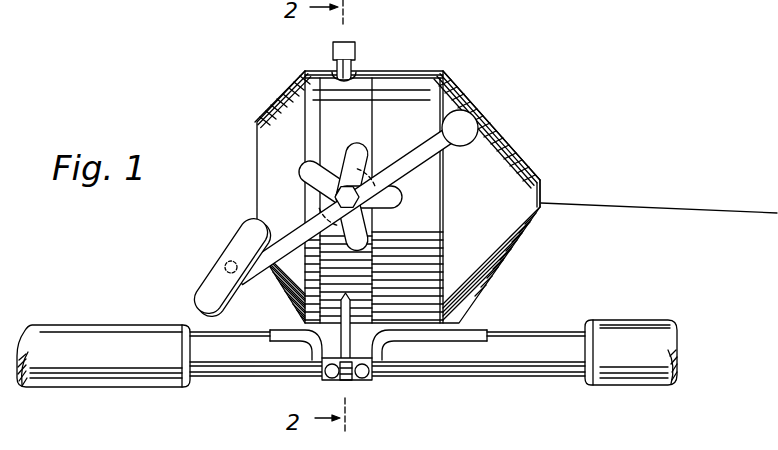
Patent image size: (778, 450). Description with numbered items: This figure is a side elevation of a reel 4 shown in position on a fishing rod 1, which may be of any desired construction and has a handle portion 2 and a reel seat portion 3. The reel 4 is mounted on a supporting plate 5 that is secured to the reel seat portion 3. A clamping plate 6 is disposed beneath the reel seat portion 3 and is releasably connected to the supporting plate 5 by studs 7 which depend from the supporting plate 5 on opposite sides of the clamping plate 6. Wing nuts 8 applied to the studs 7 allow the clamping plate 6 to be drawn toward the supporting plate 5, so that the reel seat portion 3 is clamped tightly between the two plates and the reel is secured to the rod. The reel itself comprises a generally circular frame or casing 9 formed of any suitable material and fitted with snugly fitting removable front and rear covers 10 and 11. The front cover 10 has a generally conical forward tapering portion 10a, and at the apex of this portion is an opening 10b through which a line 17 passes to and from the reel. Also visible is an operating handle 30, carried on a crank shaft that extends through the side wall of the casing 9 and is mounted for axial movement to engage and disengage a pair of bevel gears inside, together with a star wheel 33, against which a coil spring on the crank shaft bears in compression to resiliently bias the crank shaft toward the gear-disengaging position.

The fishing rod 1 is at (647, 314).
The handle portion 2 is at (114, 325).
The reel seat portion 3 is at (560, 332).
The reel 4 is at (414, 66).
The supporting plate 5 is at (488, 329).
The clamping plate 6 is at (305, 370).
The studs 7 is at (352, 345).
The wing nuts 8 is at (363, 380).
The frame or casing 9 is at (357, 70).
The front cover 10 is at (446, 71).
The conical forward tapering portion 10a is at (496, 134).
The opening 10b is at (542, 192).
The rear cover 11 is at (285, 95).
The line 17 is at (647, 207).
The operating handle 30 is at (283, 220).
The star wheel 33 is at (295, 166).